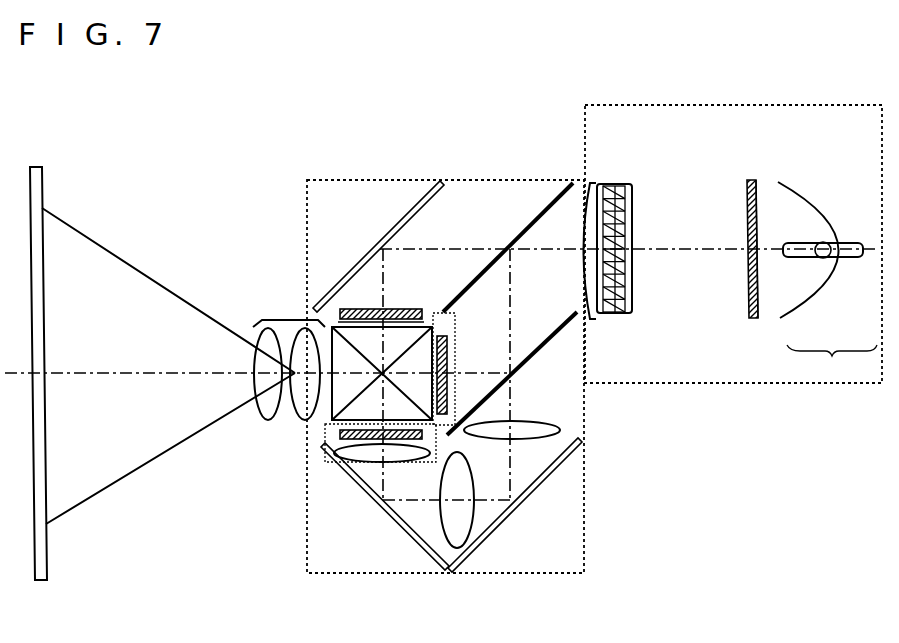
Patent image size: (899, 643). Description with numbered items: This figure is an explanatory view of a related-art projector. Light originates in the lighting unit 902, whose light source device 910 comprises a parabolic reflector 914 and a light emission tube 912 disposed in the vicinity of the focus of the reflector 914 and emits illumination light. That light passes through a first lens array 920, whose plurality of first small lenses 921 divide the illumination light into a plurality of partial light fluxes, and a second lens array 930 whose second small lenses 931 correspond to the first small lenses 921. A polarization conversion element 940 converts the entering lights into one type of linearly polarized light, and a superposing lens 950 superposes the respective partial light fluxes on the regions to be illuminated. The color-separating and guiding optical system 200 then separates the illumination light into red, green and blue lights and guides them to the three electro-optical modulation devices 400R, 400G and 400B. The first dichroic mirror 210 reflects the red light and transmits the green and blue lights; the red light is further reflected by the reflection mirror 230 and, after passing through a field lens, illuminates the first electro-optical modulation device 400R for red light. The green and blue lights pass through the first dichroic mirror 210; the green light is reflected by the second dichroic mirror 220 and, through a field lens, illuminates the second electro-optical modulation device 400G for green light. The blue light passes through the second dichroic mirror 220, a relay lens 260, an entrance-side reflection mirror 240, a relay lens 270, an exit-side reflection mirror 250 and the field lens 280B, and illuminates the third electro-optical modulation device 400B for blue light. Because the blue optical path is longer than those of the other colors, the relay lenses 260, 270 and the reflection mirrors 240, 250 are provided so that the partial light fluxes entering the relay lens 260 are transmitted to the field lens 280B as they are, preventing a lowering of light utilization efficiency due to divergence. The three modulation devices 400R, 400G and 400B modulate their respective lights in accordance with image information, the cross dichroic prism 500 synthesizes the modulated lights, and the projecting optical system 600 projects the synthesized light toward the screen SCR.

The screen SCR is at (45, 518).
The projecting optical system 600 is at (283, 323).
The cross dichroic prism 500 is at (332, 420).
The first electro-optical modulation device 400R is at (340, 305).
The second electro-optical modulation device 400G is at (440, 335).
The third electro-optical modulation device 400B is at (340, 433).
The color-separating and guiding optical system 200 is at (584, 518).
The first dichroic mirror 210 is at (508, 249).
The second dichroic mirror 220 is at (560, 328).
The reflection mirror 230 is at (377, 249).
The entrance-side reflection mirror 240 is at (533, 487).
The exit-side reflection mirror 250 is at (404, 526).
The relay lens 260 is at (540, 427).
The relay lens 270 is at (466, 515).
The field lens 280B is at (365, 460).
The lighting unit 902 is at (765, 383).
The light source device 910 is at (832, 358).
The light emission tube 912 is at (822, 262).
The parabolic reflector 914 is at (828, 283).
The first lens array 920 is at (749, 185).
The first small lenses 921 is at (753, 200).
The second lens array 930 is at (620, 312).
The second small lenses 931 is at (628, 243).
The polarization conversion element 940 is at (620, 313).
The superposing lens 950 is at (593, 320).